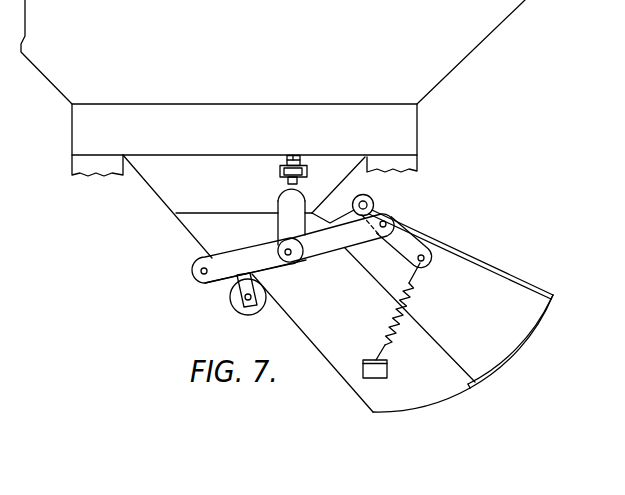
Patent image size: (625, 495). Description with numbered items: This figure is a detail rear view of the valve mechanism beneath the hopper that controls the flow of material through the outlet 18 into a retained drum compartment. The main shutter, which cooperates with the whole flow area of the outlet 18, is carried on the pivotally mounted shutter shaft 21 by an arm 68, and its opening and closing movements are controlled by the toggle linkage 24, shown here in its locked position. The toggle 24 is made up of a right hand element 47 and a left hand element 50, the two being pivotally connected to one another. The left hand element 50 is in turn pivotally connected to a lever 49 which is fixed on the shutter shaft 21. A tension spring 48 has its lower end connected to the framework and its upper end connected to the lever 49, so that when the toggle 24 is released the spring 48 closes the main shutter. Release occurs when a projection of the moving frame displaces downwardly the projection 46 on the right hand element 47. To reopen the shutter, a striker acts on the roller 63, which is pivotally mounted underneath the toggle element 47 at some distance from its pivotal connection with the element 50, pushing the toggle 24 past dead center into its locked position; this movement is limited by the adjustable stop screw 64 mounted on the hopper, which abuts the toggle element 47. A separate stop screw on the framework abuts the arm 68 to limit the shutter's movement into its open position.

The outlet 18 is at (352, 336).
The shutter shaft 21 is at (374, 201).
The toggle linkage 24 is at (319, 264).
The projection 46 is at (280, 176).
The right hand element 47 is at (229, 256).
The tension spring 48 is at (406, 306).
The lever 49 is at (410, 240).
The left hand element 50 is at (362, 240).
The roller 63 is at (232, 300).
The adjustable stop screw 64 is at (300, 166).
The arm 68 is at (533, 288).